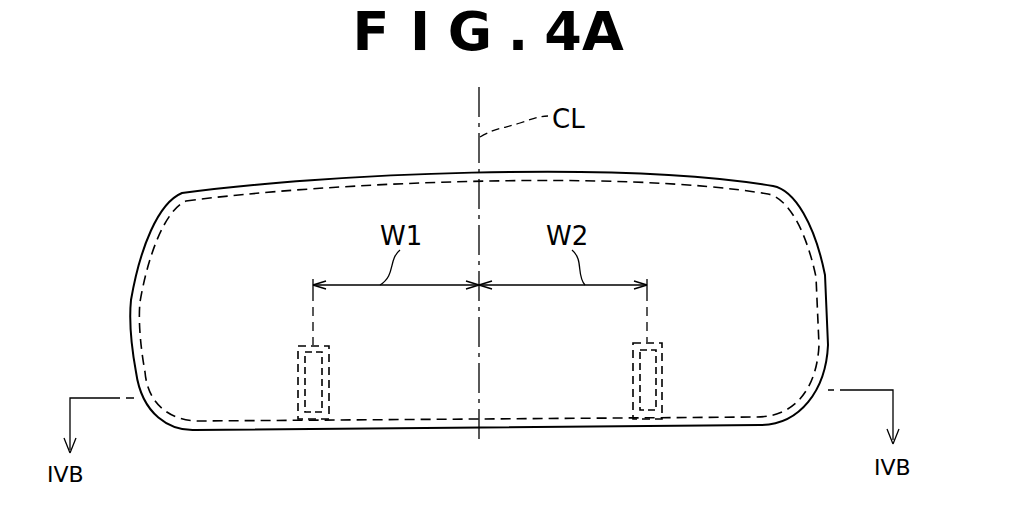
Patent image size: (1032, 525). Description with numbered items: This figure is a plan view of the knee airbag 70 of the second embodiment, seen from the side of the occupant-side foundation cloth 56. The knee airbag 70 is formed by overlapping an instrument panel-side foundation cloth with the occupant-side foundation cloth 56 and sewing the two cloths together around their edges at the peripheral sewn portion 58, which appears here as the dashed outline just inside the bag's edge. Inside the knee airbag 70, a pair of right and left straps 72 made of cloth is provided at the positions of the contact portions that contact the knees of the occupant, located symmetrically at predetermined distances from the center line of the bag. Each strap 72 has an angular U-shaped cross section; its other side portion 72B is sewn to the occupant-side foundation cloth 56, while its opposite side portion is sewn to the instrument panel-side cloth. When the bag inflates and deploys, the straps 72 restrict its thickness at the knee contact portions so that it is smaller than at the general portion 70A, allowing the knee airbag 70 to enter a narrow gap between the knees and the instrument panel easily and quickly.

The knee airbag 70 is at (613, 157).
The general portion 70A is at (160, 315).
The peripheral sewn portion 58 is at (818, 261).
The occupant-side foundation cloth 56 is at (217, 383).
The strap 72 is at (299, 370).
The other side portion 72B is at (331, 420).